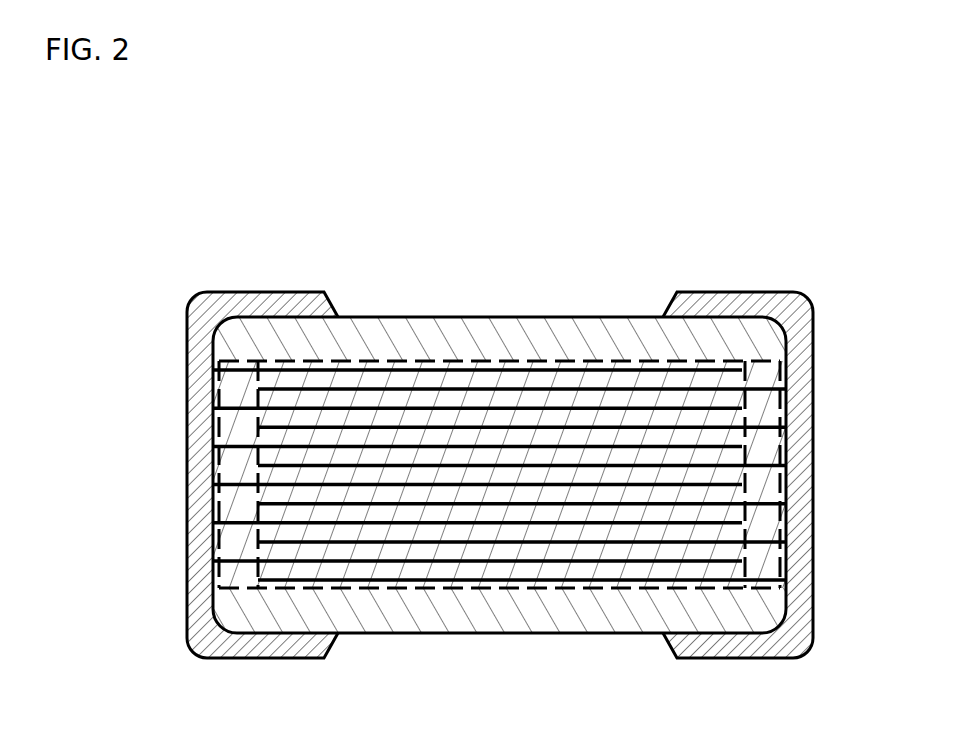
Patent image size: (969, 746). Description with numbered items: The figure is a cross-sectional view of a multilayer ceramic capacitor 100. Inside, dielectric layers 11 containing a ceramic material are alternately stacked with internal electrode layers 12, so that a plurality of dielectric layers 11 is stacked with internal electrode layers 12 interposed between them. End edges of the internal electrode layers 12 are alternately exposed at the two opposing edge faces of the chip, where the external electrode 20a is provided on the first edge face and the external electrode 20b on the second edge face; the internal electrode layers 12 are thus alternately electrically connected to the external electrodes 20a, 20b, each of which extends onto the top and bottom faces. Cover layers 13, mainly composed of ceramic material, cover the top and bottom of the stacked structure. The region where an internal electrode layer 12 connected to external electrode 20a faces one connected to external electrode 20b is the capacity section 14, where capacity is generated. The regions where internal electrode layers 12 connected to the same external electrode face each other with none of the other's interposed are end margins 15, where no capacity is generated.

The multilayer ceramic capacitor 100 is at (715, 238).
The dielectric layer 11 is at (607, 548).
The internal electrode layer 12 is at (447, 522).
The cover layer 13 is at (400, 330).
The capacity section 14 is at (522, 362).
The end margin 15 is at (238, 362).
The external electrode 20a is at (213, 293).
The external electrode 20b is at (777, 292).